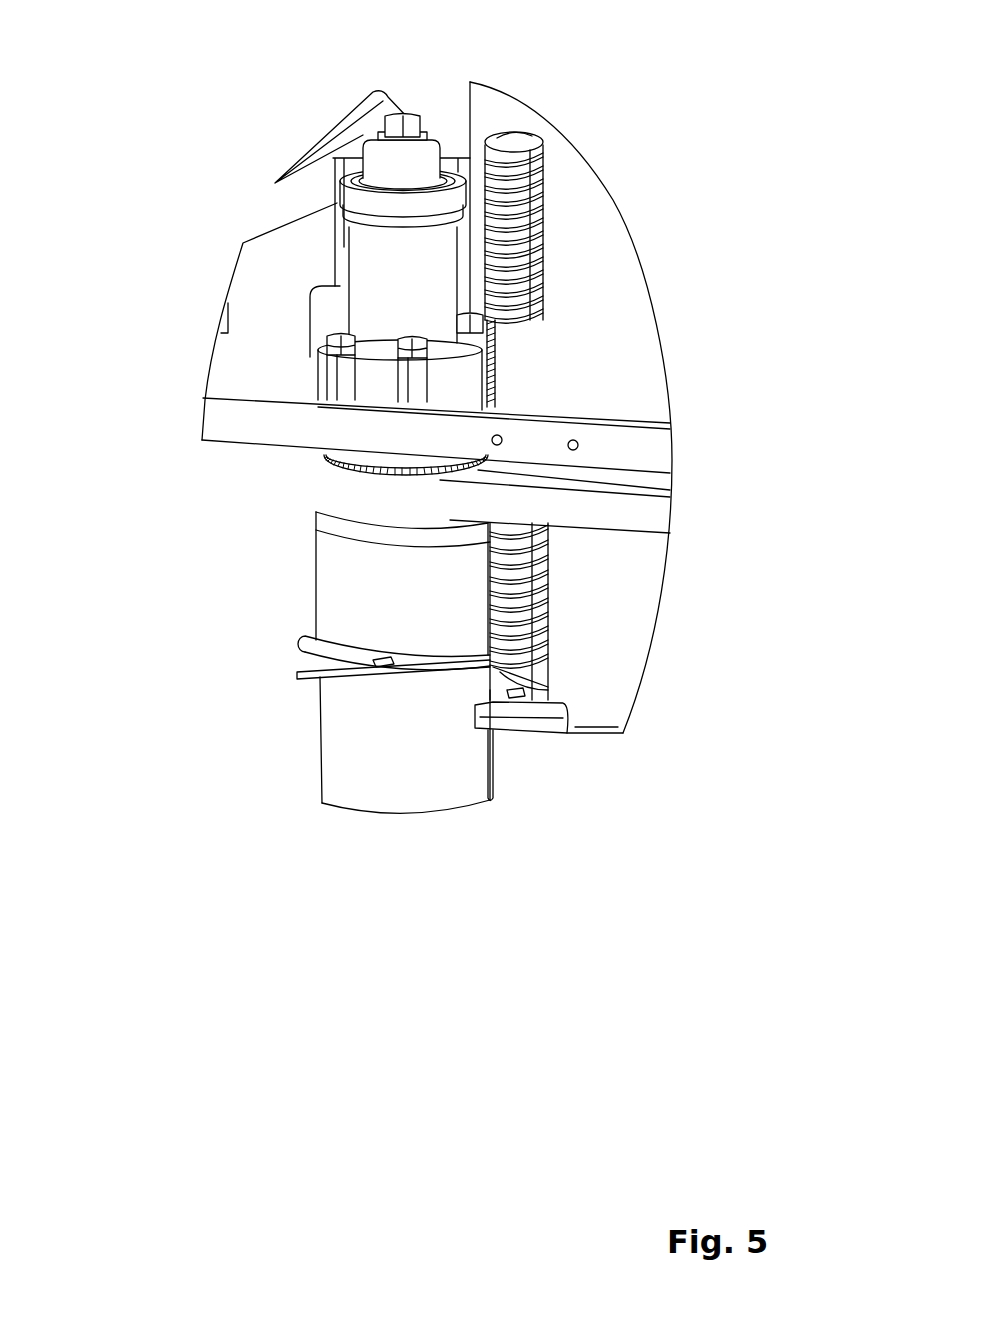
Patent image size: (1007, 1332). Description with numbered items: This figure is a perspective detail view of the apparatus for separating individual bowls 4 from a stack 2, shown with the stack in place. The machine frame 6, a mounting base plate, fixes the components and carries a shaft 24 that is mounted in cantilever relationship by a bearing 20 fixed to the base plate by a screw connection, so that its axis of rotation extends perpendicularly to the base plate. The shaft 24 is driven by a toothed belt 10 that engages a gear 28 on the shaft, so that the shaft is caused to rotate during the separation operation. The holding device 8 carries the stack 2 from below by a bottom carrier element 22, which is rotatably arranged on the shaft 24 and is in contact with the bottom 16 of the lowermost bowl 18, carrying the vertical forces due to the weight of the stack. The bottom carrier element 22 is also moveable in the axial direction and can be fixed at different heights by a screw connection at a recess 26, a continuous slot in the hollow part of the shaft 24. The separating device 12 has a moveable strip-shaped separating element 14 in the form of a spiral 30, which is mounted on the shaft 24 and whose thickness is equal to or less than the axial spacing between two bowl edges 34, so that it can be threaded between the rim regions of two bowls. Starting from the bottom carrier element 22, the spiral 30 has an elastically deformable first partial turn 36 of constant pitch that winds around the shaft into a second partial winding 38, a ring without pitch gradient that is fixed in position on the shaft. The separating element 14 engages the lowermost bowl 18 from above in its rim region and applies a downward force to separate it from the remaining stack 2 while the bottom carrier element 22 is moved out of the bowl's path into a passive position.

The stack 2 is at (466, 122).
The bowl 4 is at (510, 170).
The machine frame 6 is at (625, 445).
The holding device 8 is at (338, 847).
The toothed belt 10 is at (524, 517).
The separating device 12 is at (285, 697).
The separating element 14 is at (302, 650).
The bottom 16 is at (538, 700).
The lowermost bowl 18 is at (532, 688).
The bearing 20 is at (362, 387).
The bottom carrier element 22 is at (523, 707).
The shaft 24 is at (388, 707).
The recess 26 is at (485, 772).
The gear 28 is at (360, 478).
The spiral 30 is at (361, 618).
The bowl edge 34 is at (510, 670).
The first partial turn 36 is at (314, 800).
The second partial winding 38 is at (310, 657).